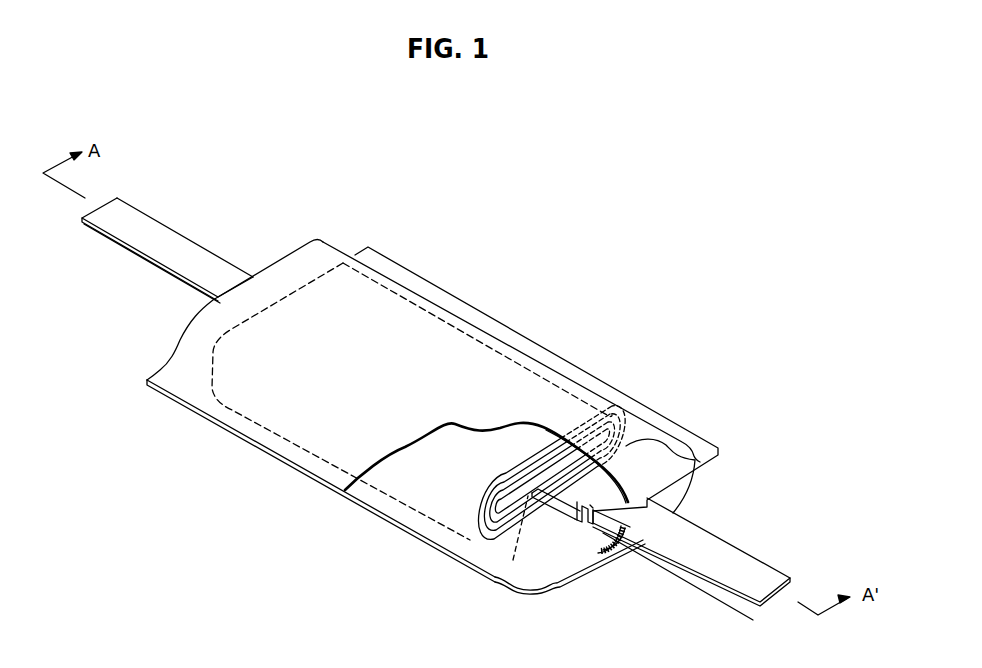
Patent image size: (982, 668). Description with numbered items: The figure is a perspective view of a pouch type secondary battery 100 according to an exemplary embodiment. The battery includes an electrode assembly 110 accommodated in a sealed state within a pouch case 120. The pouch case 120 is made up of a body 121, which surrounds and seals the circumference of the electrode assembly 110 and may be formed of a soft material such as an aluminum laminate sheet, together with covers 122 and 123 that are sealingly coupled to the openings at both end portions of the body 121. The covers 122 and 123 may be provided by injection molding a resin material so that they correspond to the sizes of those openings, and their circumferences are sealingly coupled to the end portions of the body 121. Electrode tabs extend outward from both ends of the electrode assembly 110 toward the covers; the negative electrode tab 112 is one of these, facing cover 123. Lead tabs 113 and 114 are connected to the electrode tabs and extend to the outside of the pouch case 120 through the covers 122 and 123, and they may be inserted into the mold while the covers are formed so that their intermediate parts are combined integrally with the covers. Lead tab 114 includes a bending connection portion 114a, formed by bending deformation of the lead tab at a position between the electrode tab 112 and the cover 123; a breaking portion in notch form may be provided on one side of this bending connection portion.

The pouch type secondary battery 100 is at (580, 224).
The electrode assembly 110 is at (430, 498).
The negative electrode tab 112 is at (558, 515).
The lead tab 113 is at (140, 215).
The lead tab 114 is at (757, 572).
The bending connection portion 114a is at (580, 523).
The pouch case 120 is at (465, 411).
The body 121 is at (506, 367).
The cover 122 is at (264, 268).
The cover 123 is at (678, 465).